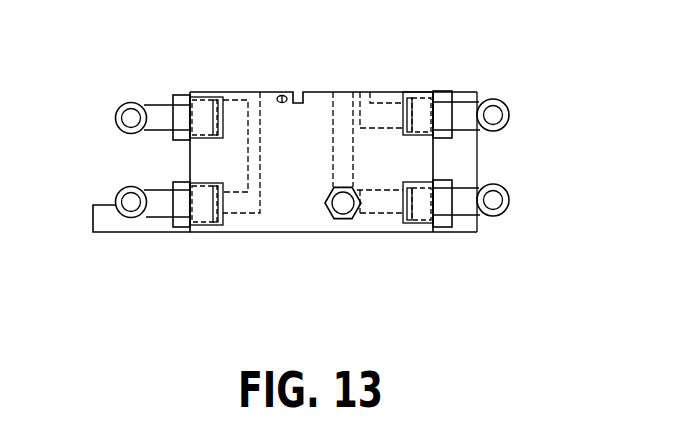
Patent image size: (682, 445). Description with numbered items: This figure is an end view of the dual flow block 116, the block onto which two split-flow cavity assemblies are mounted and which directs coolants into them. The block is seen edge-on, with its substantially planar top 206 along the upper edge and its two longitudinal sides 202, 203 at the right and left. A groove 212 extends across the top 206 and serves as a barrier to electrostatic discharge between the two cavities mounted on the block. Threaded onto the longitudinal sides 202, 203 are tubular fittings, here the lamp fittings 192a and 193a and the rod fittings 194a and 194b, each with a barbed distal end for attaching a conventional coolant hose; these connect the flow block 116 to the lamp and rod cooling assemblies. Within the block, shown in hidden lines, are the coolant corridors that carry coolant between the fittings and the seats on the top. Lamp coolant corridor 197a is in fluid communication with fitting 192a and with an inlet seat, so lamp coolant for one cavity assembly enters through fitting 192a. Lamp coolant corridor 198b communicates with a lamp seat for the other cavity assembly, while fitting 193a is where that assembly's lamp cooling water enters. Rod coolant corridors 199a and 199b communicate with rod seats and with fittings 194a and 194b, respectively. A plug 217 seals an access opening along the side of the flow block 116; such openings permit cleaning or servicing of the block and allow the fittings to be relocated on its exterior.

The dual flow block 116 is at (303, 207).
The lamp fitting 192a is at (470, 108).
The lamp fitting 193a is at (158, 208).
The rod fitting 194a is at (160, 112).
The rod fitting 194b is at (468, 205).
The lamp coolant corridor 197a is at (388, 98).
The lamp coolant corridor 198b is at (233, 216).
The rod coolant corridor 199a is at (387, 215).
The rod coolant corridor 199b is at (243, 106).
The longitudinal side 202 is at (433, 160).
The longitudinal side 203 is at (190, 167).
The planar top 206 is at (320, 90).
The groove 212 is at (297, 90).
The plug 217 is at (342, 221).